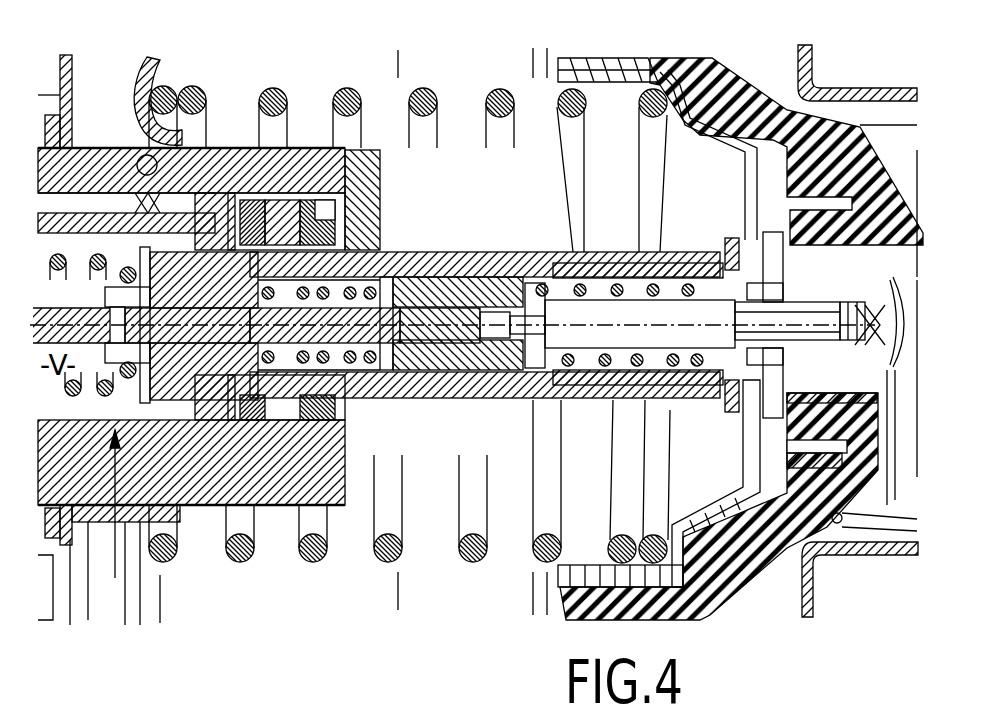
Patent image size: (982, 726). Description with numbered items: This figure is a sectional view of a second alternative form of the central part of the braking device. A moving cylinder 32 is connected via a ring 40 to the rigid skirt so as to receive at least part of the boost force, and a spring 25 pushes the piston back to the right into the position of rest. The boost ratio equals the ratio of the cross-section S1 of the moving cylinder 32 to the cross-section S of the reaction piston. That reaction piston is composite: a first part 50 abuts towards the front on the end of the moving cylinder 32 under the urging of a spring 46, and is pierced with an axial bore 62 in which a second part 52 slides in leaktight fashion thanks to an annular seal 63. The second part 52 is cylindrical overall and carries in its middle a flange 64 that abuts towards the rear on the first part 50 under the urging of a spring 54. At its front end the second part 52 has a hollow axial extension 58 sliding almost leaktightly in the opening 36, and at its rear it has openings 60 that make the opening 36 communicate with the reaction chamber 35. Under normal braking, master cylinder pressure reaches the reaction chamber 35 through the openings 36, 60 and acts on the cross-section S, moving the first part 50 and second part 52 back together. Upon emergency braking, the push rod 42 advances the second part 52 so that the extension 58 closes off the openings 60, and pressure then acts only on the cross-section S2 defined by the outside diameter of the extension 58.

The spring 25 is at (500, 96).
The moving cylinder 32 is at (470, 262).
The reaction chamber 35 is at (368, 202).
The opening 36 is at (128, 268).
The ring 40 is at (745, 400).
The push rod 42 is at (627, 330).
The spring 46 is at (690, 258).
The first part 50 is at (482, 398).
The second part 52 is at (462, 368).
The spring 54 is at (263, 506).
The hollow axial extension 58 is at (212, 312).
The openings 60 is at (350, 345).
The axial bore 62 is at (448, 262).
The annular seal 63 is at (542, 300).
The flange 64 is at (375, 280).
The cross-section S is at (493, 215).
The cross-section S1 is at (115, 215).
The cross-section S2 is at (364, 397).